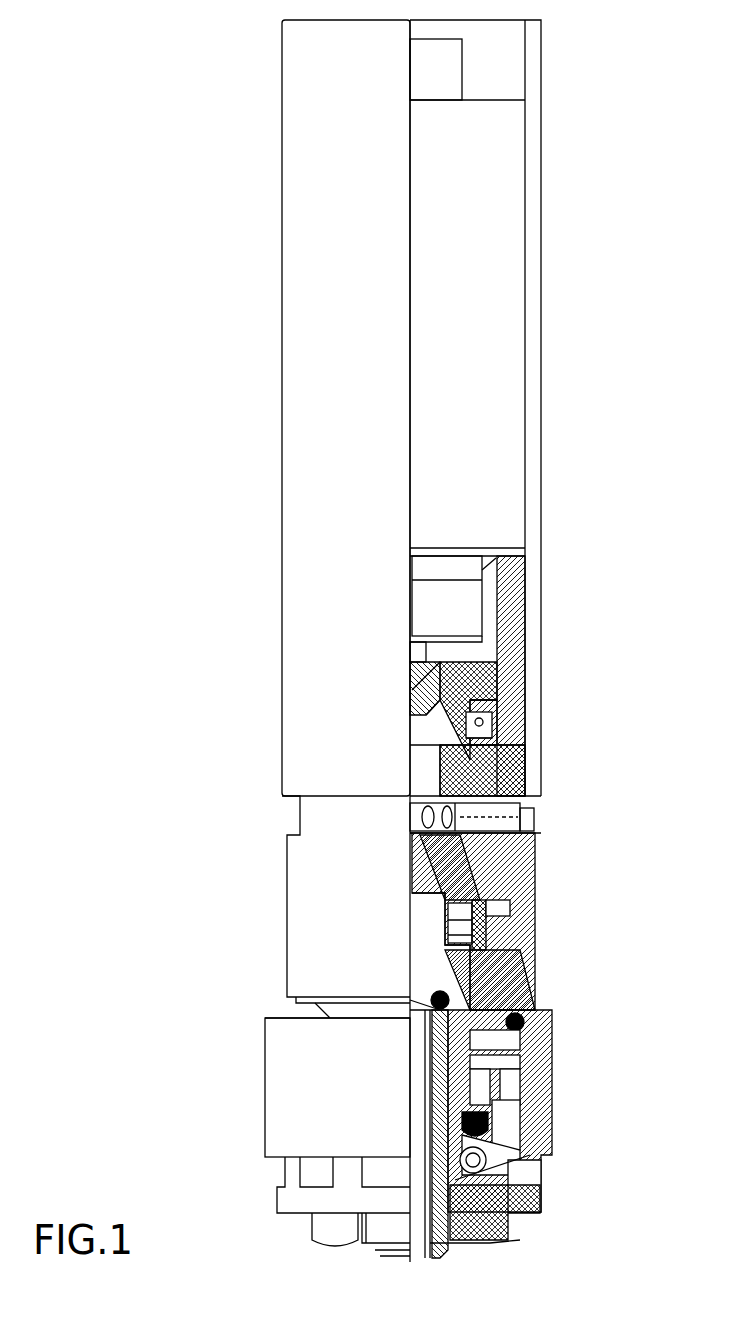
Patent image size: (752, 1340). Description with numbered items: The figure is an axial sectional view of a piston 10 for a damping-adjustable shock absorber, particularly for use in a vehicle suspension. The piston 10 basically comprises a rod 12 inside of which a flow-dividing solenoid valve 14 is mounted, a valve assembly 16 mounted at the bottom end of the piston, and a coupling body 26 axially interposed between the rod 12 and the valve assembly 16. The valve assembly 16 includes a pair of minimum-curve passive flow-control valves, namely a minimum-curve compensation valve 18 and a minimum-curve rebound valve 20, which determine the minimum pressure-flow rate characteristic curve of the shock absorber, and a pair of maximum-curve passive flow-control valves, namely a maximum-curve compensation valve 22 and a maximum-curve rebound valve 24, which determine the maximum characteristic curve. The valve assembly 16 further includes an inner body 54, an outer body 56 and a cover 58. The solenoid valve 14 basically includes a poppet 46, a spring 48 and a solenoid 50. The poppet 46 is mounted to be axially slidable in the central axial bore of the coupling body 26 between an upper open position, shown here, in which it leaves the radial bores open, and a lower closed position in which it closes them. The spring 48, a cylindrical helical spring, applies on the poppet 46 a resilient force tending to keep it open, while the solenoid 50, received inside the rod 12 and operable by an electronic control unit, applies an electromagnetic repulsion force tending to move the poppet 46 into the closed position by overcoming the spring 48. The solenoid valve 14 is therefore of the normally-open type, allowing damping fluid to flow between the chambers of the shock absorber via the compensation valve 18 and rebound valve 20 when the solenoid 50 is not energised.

The piston 10 is at (240, 617).
The rod 12 is at (541, 310).
The flow-dividing solenoid valve 14 is at (485, 648).
The valve assembly 16 is at (520, 1128).
The minimum-curve compensation valve 18 is at (535, 903).
The minimum-curve rebound valve 20 is at (528, 978).
The maximum-curve compensation valve 22 is at (552, 1044).
The maximum-curve rebound valve 24 is at (520, 1162).
The coupling body 26 is at (526, 712).
The poppet 46 is at (505, 758).
The spring 48 is at (497, 690).
The solenoid 50 is at (513, 405).
The inner body 54 is at (535, 928).
The outer body 56 is at (555, 1090).
The cover 58 is at (520, 1240).